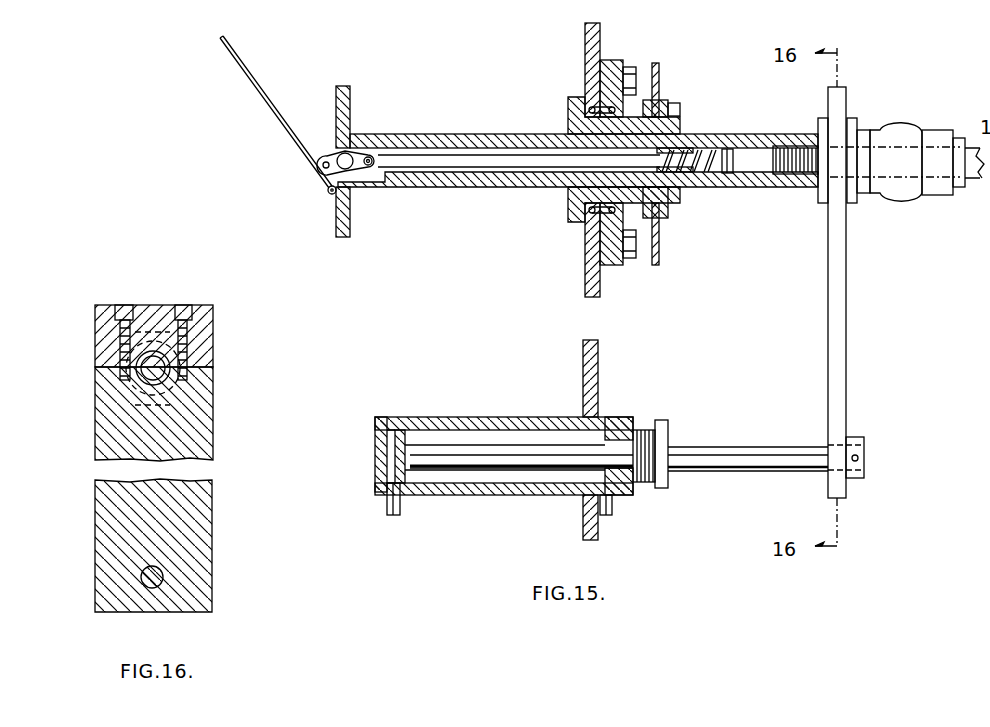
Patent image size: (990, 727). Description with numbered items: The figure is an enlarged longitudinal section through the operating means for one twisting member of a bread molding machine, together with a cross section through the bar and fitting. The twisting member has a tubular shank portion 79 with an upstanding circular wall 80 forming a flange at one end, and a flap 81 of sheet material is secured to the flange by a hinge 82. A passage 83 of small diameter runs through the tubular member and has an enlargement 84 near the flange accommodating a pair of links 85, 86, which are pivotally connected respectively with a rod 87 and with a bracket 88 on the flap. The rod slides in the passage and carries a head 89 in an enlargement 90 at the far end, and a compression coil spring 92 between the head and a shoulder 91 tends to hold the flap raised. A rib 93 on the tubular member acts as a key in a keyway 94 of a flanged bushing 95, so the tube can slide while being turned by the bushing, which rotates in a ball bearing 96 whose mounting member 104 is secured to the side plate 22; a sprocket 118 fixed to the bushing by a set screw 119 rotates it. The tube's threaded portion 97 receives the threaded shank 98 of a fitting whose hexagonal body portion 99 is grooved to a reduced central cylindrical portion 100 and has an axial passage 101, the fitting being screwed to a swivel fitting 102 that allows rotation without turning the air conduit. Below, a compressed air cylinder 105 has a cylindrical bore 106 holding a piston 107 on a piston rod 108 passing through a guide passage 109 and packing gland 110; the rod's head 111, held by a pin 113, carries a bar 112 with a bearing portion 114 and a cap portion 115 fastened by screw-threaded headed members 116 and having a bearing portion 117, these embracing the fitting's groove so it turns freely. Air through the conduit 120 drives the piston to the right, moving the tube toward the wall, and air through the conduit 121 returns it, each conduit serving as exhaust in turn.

In FIG. 15, the side plate 22 is at (600, 42).
In FIG. 15, the tubular shank portion 79 is at (428, 134).
In FIG. 15, the upstanding circular wall 80 is at (340, 86).
In FIG. 15, the flap 81 is at (272, 110).
In FIG. 15, the hinge 82 is at (328, 193).
In FIG. 15, the passage 83 is at (480, 187).
In FIG. 15, the enlargement 84 is at (372, 150).
In FIG. 15, the link 85 is at (338, 152).
In FIG. 15, the link 86 is at (358, 158).
In FIG. 15, the rod 87 is at (467, 158).
In FIG. 15, the bracket 88 is at (322, 160).
In FIG. 15, the head 89 is at (728, 175).
In FIG. 15, the enlargement 90 is at (755, 162).
In FIG. 15, the shoulder 91 is at (675, 146).
In FIG. 15, the compression coil spring 92 is at (690, 175).
In FIG. 15, the rib 93 is at (575, 130).
In FIG. 15, the keyway 94 is at (632, 100).
In FIG. 15, the flanged bushing 95 is at (578, 196).
In FIG. 15, the bearing member 96 is at (608, 106).
In FIG. 15, the internally screw-threaded portion 97 is at (795, 180).
In FIG. 15, the threaded shank 98 is at (792, 152).
In FIG. 15, the hexagonal body portion 99 is at (852, 138).
In FIG. 16, the hexagonal body portion 99 is at (178, 366).
In FIG. 16, the reduced central cylindrical portion 100 is at (170, 355).
In FIG. 16, the axial passage 101 is at (135, 372).
In FIG. 15, the swivel fitting 102 is at (900, 130).
In FIG. 15, the mounting member 104 is at (615, 268).
In FIG. 15, the compressed air cylinder 105 is at (470, 425).
In FIG. 15, the cylindrical bore 106 is at (430, 430).
In FIG. 15, the piston 107 is at (400, 440).
In FIG. 15, the piston rod 108 is at (572, 460).
In FIG. 16, the piston rod 108 is at (163, 576).
In FIG. 15, the guide passage 109 is at (628, 480).
In FIG. 15, the packing gland 110 is at (645, 440).
In FIG. 15, the head 111 is at (858, 442).
In FIG. 15, the bar 112 is at (844, 297).
In FIG. 16, the bar 112 is at (213, 452).
In FIG. 15, the pin 113 is at (860, 458).
In FIG. 16, the bearing portion 114 is at (178, 381).
In FIG. 15, the cap portion 115 is at (838, 104).
In FIG. 16, the cap portion 115 is at (145, 315).
In FIG. 16, the screw-threaded headed members 116 is at (122, 310).
In FIG. 16, the bearing portion 117 is at (150, 340).
In FIG. 15, the sprocket 118 is at (658, 78).
In FIG. 15, the set screw 119 is at (672, 103).
In FIG. 15, the conduit 120 is at (390, 505).
In FIG. 15, the conduit 121 is at (612, 512).